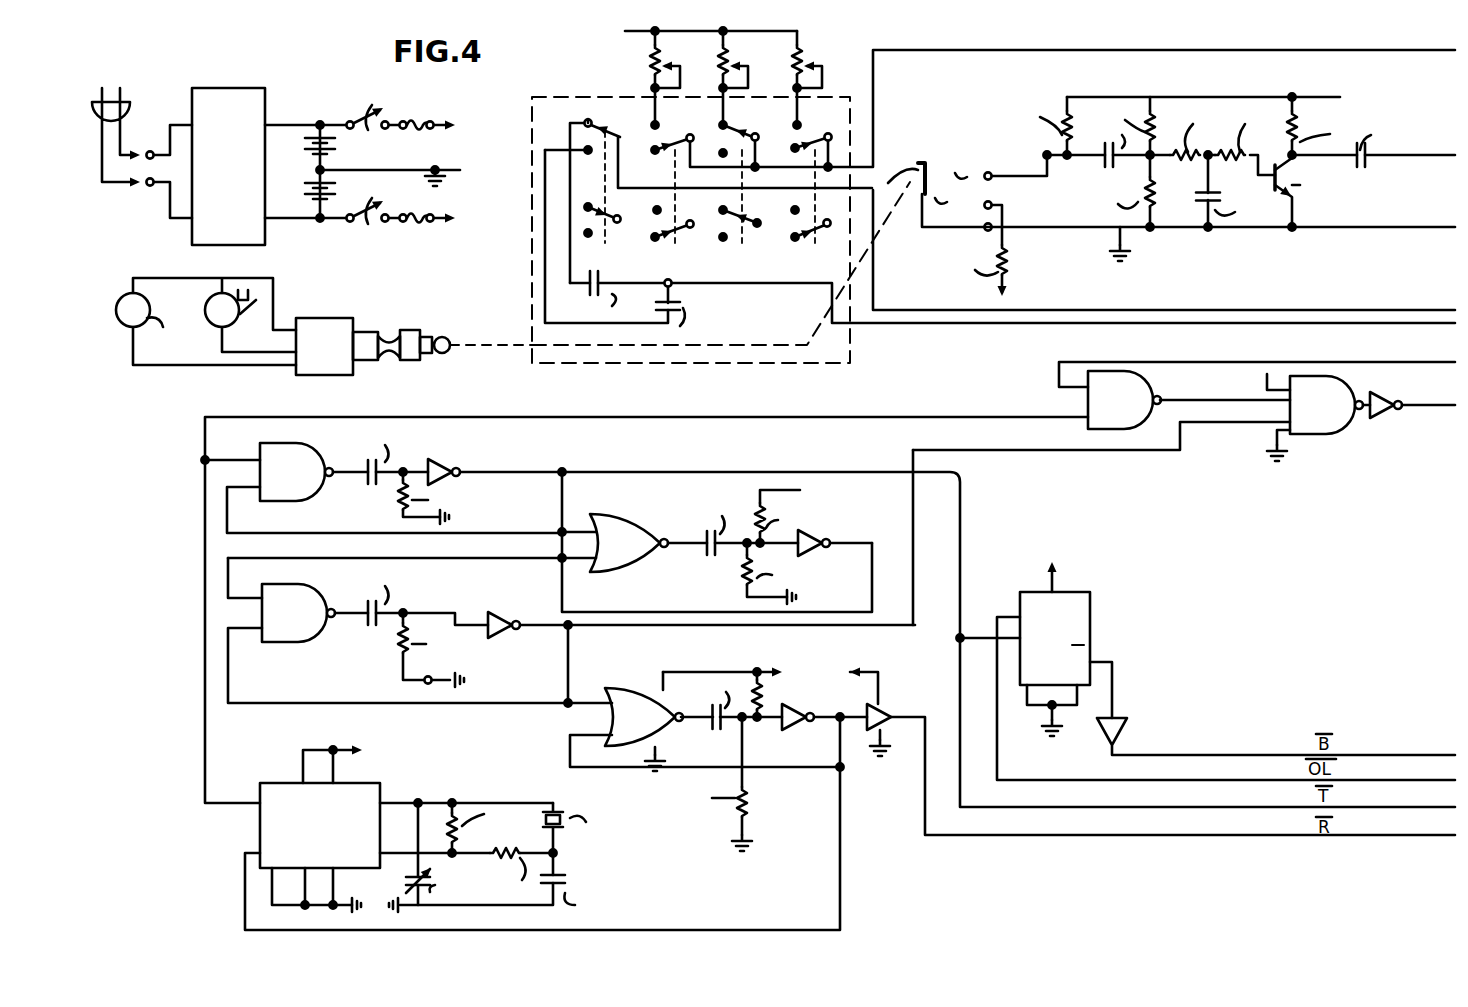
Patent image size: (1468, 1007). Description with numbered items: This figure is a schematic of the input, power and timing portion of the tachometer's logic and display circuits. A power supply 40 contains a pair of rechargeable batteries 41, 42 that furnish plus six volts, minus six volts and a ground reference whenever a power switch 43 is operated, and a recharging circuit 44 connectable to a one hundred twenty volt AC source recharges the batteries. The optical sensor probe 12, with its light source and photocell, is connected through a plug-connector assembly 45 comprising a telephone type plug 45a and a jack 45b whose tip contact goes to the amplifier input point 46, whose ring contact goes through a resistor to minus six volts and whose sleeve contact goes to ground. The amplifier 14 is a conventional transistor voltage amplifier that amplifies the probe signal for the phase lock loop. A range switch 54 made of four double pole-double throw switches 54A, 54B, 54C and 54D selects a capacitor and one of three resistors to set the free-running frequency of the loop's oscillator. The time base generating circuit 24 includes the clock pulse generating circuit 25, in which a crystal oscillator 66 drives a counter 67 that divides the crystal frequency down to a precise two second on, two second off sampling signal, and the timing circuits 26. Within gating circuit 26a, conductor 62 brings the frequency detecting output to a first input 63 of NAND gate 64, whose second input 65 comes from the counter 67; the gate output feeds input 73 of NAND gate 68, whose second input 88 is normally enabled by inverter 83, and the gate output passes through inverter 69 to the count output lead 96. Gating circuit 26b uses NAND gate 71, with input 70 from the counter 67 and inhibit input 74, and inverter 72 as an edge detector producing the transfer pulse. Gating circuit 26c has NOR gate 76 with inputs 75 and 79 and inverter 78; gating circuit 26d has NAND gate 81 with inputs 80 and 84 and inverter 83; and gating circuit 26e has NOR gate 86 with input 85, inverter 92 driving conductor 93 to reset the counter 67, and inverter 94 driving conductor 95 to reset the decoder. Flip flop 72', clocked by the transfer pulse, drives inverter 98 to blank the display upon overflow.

The optical sensor probe 12 is at (283, 339).
The amplifier 14 is at (1164, 180).
The time base generating circuit 24 is at (867, 858).
The clock pulse generating circuit 25 is at (462, 825).
The timing circuits 26 is at (995, 522).
The gating circuit 26a is at (1184, 430).
The gating circuit 26b is at (394, 475).
The gating circuit 26c is at (717, 541).
The gating circuit 26d is at (571, 630).
The gating circuit 26e is at (1011, 746).
The power supply 40 is at (383, 145).
The rechargeable battery 41 is at (328, 148).
The rechargeable battery 42 is at (332, 190).
The power switch 43 is at (378, 114).
The recharging circuit 44 is at (213, 212).
The plug-connector assembly 45 is at (530, 370).
The telephone type plug 45a is at (331, 283).
The jack 45b is at (963, 172).
The point 46 is at (1047, 168).
The range switch 54 is at (993, 209).
The double pole-double throw switch 54A is at (708, 201).
The double pole-double throw switch 54B is at (760, 203).
The double pole-double throw switch 54C is at (739, 198).
The double pole-double throw switch 54D is at (811, 202).
The conductor 62 is at (1433, 362).
The first input 63 is at (1059, 387).
The NAND gate 64 is at (1120, 392).
The second input 65 is at (1062, 418).
The crystal oscillator 66 is at (496, 835).
The counter 67 is at (327, 825).
The NAND gate 68 is at (1325, 418).
The inverter 69 is at (1392, 410).
The input 70 is at (250, 440).
The NAND gate 71 is at (320, 426).
The inverter 72 is at (495, 457).
The flip flop 72' is at (1205, 660).
The input 73 is at (1256, 398).
The second input 74 is at (244, 490).
The input 75 is at (580, 528).
The NOR gate 76 is at (640, 518).
The inverter 78 is at (812, 542).
The second input 79 is at (578, 562).
The input 80 is at (245, 578).
The NAND gate 81 is at (304, 592).
The inverter 83 is at (505, 614).
The input 84 is at (248, 640).
The input 85 is at (590, 702).
The NOR gate 86 is at (652, 690).
The second input 88 is at (1248, 422).
The inverter 92 is at (808, 724).
The conductor 93 is at (842, 828).
The inverter 94 is at (884, 712).
The conductor 95 is at (925, 800).
The output line 96 is at (1428, 406).
The inverter 98 is at (1118, 738).